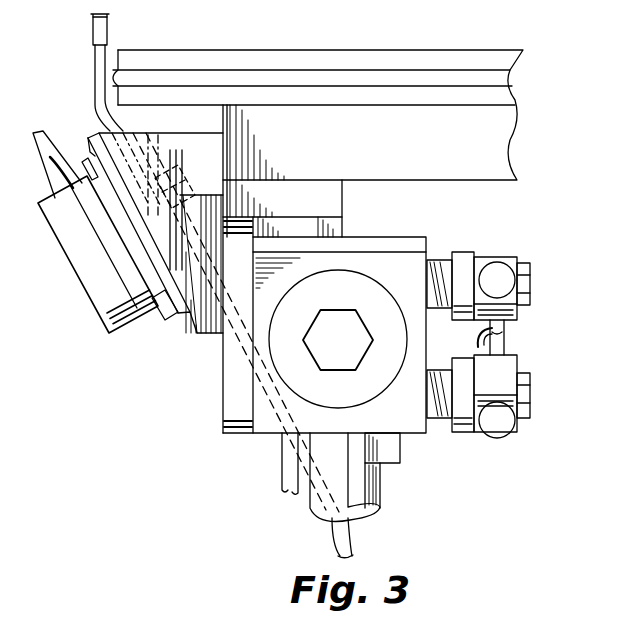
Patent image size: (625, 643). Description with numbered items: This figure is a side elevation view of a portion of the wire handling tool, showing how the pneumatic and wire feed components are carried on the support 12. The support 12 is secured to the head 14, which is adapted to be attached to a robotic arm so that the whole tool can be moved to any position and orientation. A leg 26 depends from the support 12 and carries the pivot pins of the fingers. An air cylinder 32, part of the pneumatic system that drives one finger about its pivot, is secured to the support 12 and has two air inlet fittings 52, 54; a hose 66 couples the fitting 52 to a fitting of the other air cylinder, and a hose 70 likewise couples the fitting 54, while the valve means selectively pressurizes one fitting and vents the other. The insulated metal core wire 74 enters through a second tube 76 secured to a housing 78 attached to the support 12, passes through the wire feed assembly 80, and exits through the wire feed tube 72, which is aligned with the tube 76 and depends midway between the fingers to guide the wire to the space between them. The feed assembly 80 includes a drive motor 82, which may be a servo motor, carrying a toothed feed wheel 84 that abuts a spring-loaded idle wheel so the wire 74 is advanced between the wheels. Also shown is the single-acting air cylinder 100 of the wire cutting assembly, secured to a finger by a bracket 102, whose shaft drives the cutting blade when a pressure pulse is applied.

The support 12 is at (225, 388).
The head 14 is at (512, 151).
The leg 26 is at (282, 488).
The air cylinder 32 is at (352, 300).
The air inlet fitting 52 is at (531, 285).
The air inlet fitting 54 is at (531, 395).
The hose 66 is at (470, 340).
The hose 70 is at (504, 340).
The wire feed tube 72 is at (350, 548).
The insulated metal core wire 74 is at (94, 26).
The second tube 76 is at (94, 75).
The housing 78 is at (106, 134).
The wire feed assembly 80 is at (160, 322).
The drive motor 82 is at (92, 305).
The toothed feed wheel 84 is at (183, 195).
The air cylinder 100 is at (383, 499).
The bracket 102 is at (402, 453).